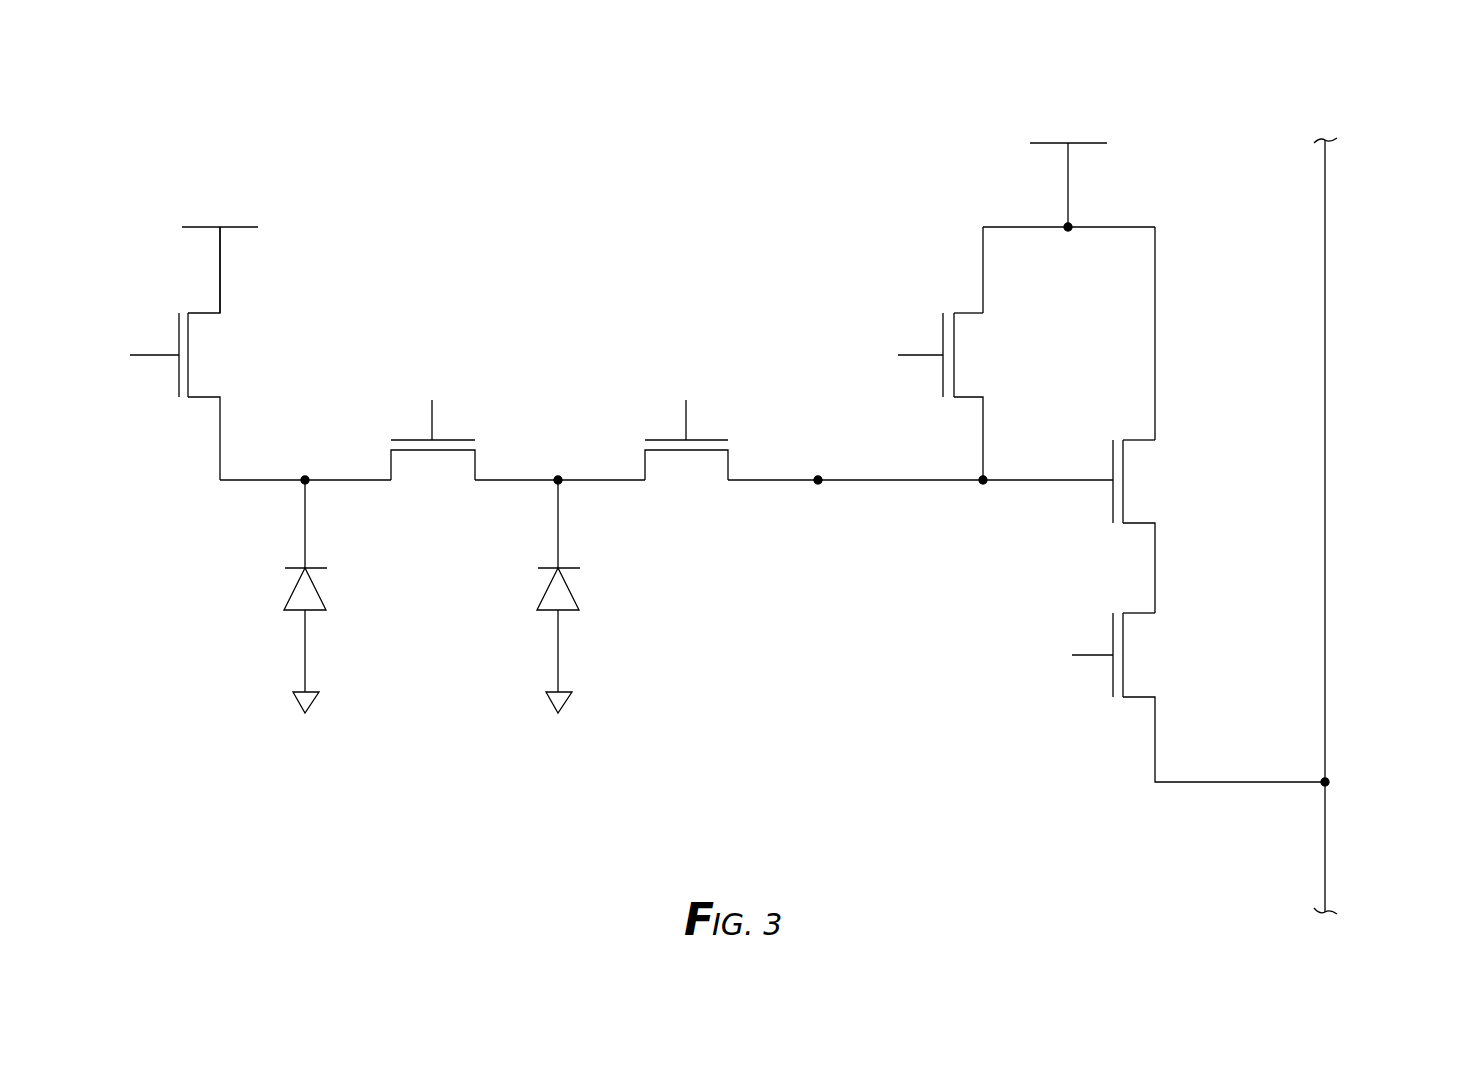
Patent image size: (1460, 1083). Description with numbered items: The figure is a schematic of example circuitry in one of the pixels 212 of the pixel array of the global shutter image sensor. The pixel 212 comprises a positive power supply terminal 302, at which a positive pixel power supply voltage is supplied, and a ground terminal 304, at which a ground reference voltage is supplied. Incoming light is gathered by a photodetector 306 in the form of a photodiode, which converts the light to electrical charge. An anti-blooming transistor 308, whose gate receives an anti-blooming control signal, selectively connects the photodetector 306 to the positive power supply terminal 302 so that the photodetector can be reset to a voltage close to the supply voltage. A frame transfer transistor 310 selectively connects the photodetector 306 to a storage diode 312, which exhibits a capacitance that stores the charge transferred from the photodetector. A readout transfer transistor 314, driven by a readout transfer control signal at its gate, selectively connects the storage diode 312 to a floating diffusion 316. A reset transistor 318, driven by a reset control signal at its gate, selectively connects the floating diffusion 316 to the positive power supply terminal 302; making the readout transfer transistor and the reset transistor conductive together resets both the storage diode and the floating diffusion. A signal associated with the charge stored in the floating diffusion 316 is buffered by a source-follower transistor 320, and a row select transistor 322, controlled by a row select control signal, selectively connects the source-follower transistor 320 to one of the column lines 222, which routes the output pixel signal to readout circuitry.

The pixel 212 is at (428, 58).
The column line 222 is at (1327, 325).
The positive power supply terminal 302 is at (190, 226).
The ground terminal 304 is at (320, 704).
The photodetector 306 is at (291, 592).
The anti-blooming transistor 308 is at (207, 312).
The frame transfer transistor 310 is at (390, 462).
The storage diode 312 is at (573, 590).
The readout transfer transistor 314 is at (643, 462).
The floating diffusion 316 is at (818, 478).
The reset transistor 318 is at (970, 312).
The source-follower transistor 320 is at (1140, 438).
The row select transistor 322 is at (1138, 611).